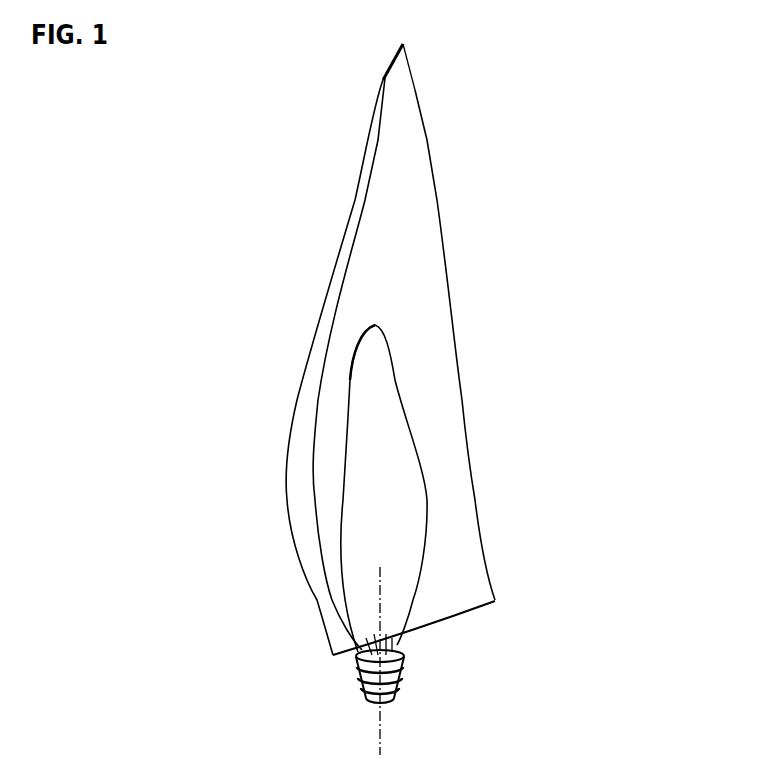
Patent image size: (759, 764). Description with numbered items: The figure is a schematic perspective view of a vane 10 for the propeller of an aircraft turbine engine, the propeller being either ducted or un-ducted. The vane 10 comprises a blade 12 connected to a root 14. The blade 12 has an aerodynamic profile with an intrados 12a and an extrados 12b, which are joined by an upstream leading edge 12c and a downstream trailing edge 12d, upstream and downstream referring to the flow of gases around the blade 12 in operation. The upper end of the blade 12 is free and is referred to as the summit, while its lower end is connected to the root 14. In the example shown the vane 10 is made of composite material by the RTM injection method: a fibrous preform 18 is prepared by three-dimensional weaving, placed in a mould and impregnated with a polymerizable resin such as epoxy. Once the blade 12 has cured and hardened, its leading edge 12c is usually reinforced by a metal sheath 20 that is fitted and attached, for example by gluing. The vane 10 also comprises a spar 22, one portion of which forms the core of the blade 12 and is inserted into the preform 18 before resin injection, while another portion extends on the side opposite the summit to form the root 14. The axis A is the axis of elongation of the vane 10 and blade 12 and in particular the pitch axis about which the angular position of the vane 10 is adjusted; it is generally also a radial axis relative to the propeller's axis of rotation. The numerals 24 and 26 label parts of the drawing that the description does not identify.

The vane 10 is at (622, 213).
The blade 12 is at (413, 222).
The intrados 12a is at (398, 118).
The extrados 12b is at (388, 72).
The leading edge 12c is at (349, 222).
The trailing edge 12d is at (447, 295).
The root 14 is at (373, 650).
The fibrous preform 18 is at (444, 390).
The metal sheath 20 is at (323, 322).
The spar 22 is at (390, 478).
The lamp neck 24 is at (350, 657).
The screw base 26 is at (403, 680).
The pitch axis A is at (382, 738).